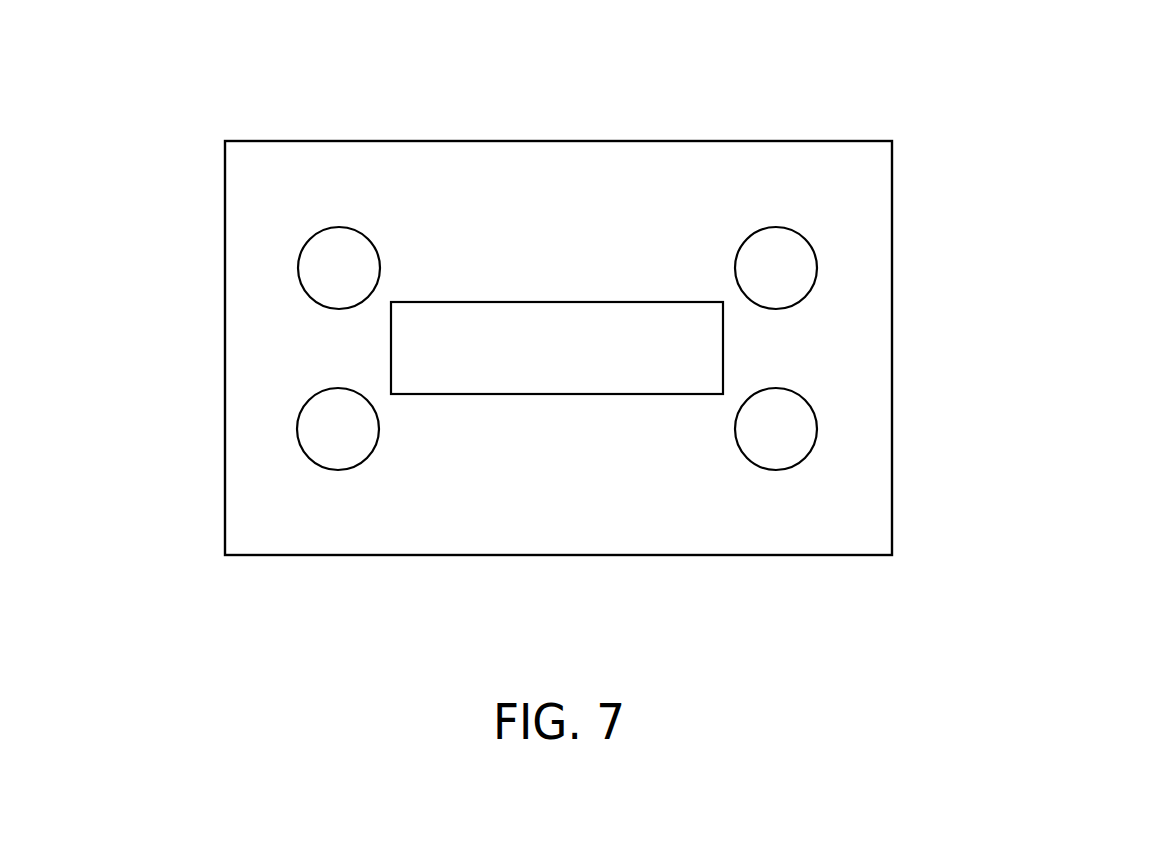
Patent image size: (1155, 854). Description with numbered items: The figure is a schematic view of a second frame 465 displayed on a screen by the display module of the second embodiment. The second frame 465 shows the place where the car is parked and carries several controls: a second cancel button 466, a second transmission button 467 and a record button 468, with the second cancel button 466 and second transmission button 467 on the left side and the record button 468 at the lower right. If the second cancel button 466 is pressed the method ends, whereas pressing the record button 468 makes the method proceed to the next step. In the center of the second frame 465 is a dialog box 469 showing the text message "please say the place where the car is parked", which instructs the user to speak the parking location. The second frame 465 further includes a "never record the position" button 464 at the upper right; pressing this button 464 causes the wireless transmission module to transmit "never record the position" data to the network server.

The "never record the position" button 464 is at (815, 287).
The second frame 465 is at (892, 217).
The second cancel button 466 is at (300, 250).
The second transmission button 467 is at (300, 413).
The record button 468 is at (813, 450).
The dialog box 469 is at (557, 302).